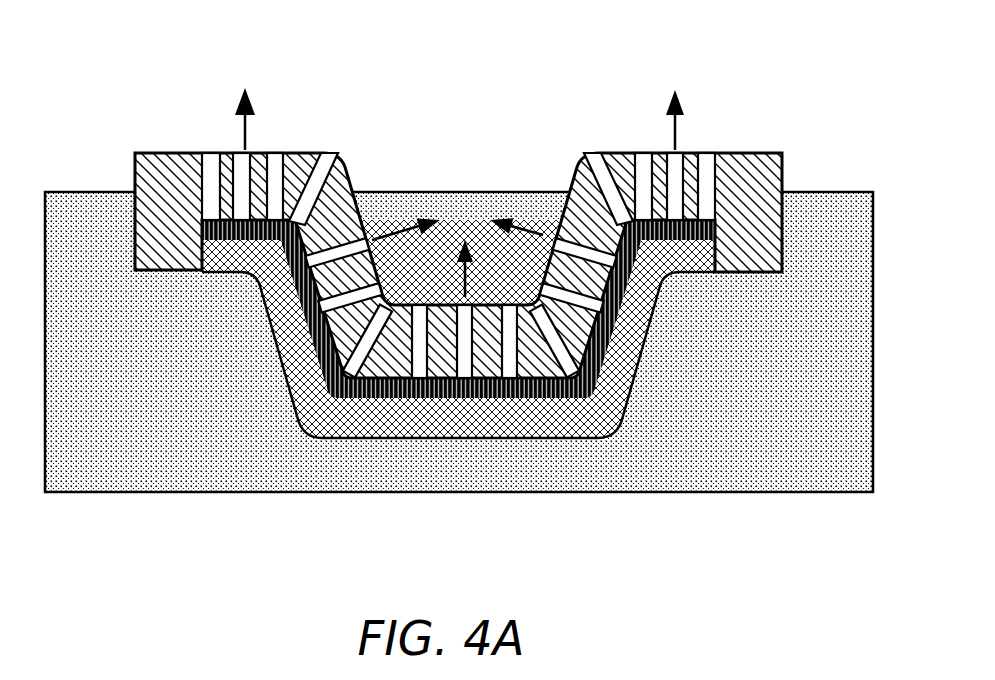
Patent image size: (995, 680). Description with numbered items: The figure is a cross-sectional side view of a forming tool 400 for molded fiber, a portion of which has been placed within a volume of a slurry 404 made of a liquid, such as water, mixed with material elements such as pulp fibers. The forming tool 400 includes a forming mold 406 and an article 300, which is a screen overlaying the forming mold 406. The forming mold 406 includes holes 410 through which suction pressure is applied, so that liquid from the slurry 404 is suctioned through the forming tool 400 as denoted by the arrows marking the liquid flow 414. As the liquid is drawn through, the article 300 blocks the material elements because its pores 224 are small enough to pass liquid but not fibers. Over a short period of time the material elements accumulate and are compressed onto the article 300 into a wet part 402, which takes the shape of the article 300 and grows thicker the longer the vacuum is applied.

The forming tool 400 is at (432, 195).
The liquid flow 414 is at (245, 122).
The holes 410 is at (582, 154).
The forming mold 406 is at (130, 78).
The slurry 404 is at (160, 450).
The wet part 402 is at (397, 438).
The pores 224 is at (537, 400).
The article 300 is at (602, 373).